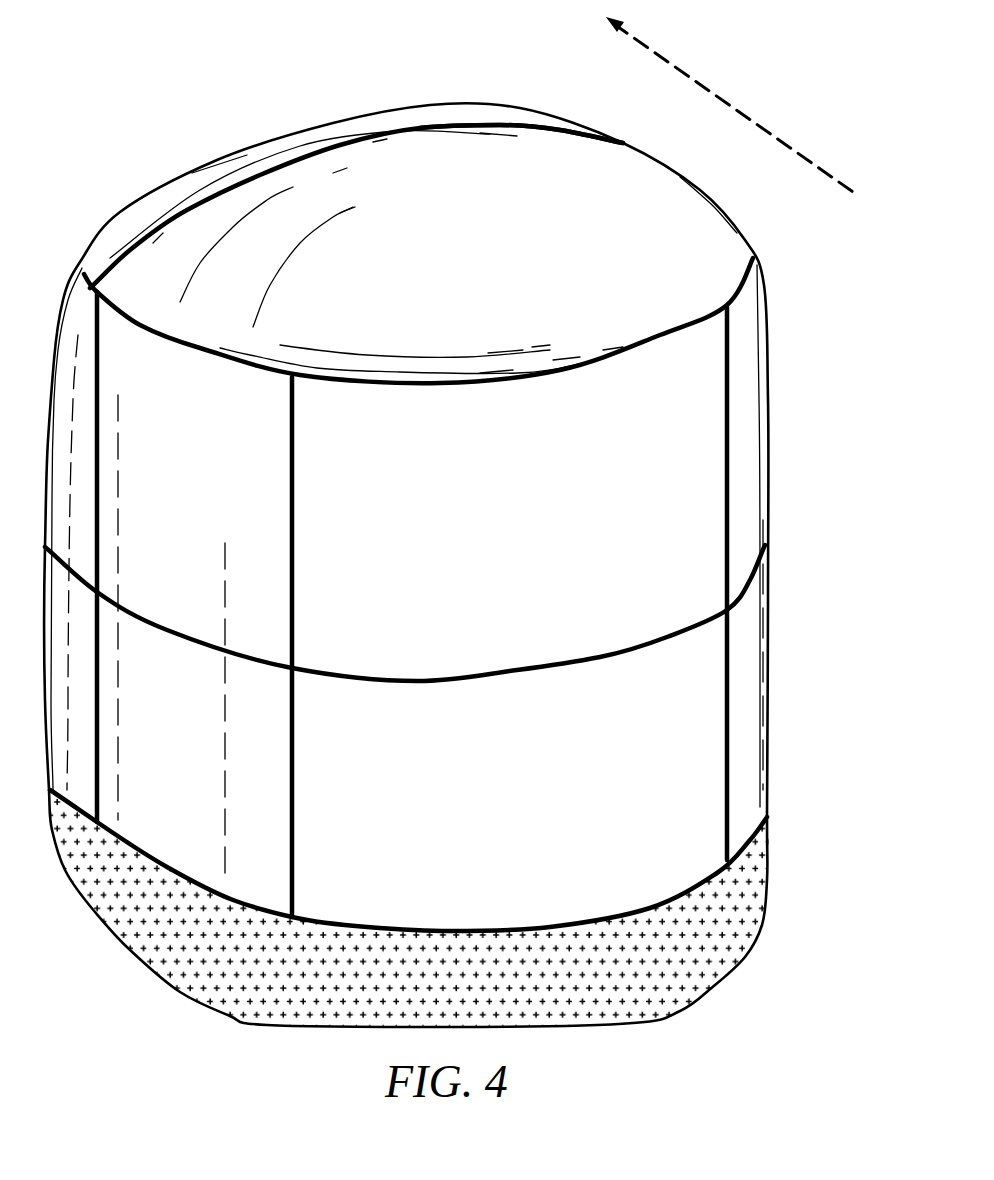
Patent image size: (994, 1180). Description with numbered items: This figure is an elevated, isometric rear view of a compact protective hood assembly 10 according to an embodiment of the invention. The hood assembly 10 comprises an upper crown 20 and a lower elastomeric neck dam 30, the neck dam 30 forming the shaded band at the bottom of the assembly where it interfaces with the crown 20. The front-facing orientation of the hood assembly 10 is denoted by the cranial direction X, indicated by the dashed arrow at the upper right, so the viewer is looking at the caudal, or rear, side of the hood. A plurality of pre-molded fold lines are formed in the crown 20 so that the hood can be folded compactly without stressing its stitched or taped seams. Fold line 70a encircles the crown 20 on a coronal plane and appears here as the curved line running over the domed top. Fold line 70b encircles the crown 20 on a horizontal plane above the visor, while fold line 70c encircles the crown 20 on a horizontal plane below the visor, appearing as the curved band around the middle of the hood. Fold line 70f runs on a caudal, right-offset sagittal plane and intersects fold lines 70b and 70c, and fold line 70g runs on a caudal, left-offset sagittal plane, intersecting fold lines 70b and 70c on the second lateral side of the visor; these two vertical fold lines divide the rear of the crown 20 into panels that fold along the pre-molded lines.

The hood assembly 10 is at (144, 153).
The crown 20 is at (362, 115).
The neck dam 30 is at (148, 945).
The fold line 70a is at (552, 132).
The fold line 70b is at (748, 293).
The fold line 70c is at (748, 598).
The fold line 70f is at (730, 435).
The fold line 70g is at (289, 493).
The cranial direction X is at (721, 100).